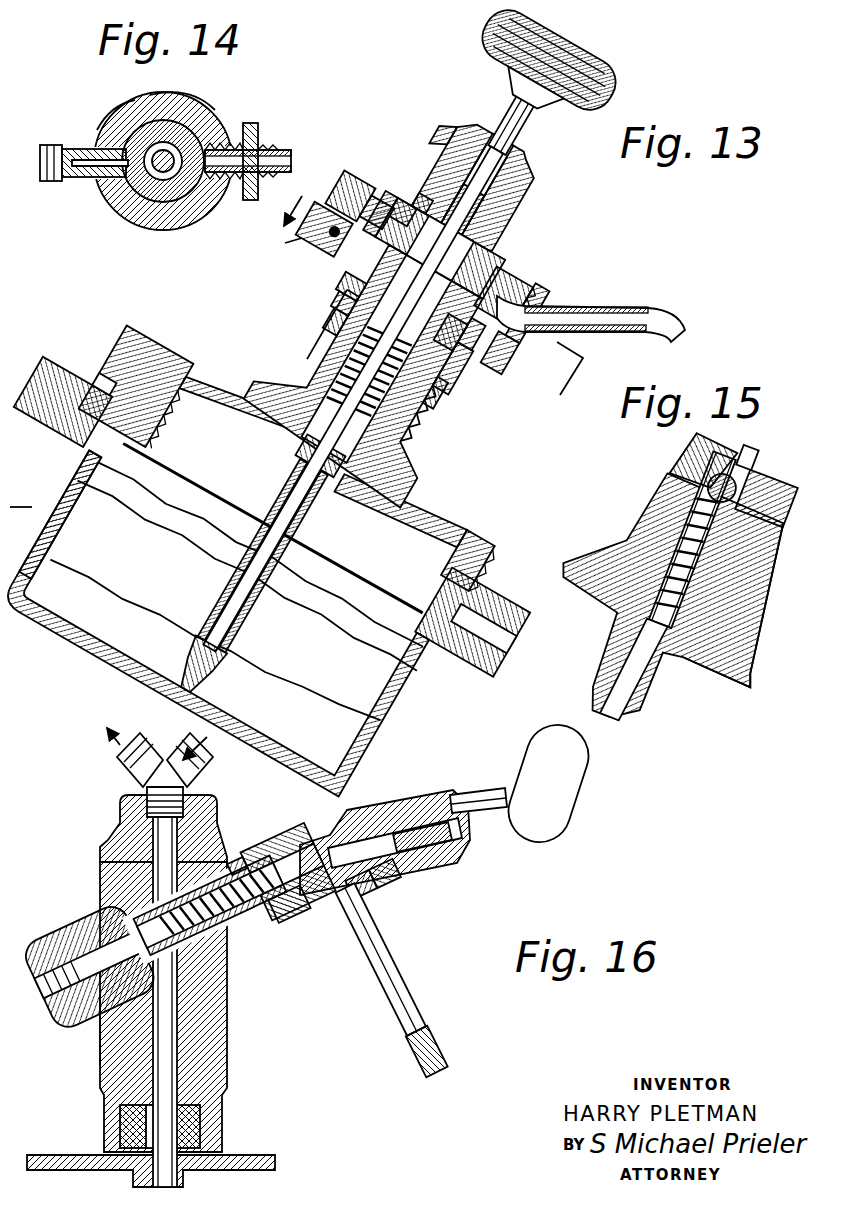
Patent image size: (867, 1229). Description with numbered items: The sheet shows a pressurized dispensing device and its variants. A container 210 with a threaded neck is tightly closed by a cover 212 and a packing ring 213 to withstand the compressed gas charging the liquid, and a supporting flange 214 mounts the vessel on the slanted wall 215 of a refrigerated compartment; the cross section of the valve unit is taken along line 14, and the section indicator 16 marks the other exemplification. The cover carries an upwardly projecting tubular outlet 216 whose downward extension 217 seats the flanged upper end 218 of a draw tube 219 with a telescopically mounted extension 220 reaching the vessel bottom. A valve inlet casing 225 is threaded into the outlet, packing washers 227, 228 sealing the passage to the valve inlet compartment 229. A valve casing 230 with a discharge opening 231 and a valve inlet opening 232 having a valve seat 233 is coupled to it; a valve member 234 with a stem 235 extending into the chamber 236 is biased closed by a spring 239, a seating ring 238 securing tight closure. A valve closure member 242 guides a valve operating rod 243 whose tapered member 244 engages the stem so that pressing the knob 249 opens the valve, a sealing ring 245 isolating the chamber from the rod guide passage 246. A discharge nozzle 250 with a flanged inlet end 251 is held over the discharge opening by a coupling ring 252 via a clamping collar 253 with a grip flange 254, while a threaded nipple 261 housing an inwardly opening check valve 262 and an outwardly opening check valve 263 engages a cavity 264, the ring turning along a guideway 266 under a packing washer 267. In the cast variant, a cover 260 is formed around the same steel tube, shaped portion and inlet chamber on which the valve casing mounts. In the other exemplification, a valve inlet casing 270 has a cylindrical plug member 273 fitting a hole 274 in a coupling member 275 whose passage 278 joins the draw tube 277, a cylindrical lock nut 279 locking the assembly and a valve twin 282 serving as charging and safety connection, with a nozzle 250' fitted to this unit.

In FIG. 13, the section line 14— 14 is at (421, 307).
In FIG. 13, the figure 16 reference 16 is at (22, 496).
In FIG. 13, the container 210 is at (90, 465).
In FIG. 13, the cover 212 is at (220, 397).
In FIG. 16, the cover 212 is at (247, 1157).
In FIG. 13, the packing ring 213 is at (170, 357).
In FIG. 13, the supporting flange 214 is at (112, 388).
In FIG. 13, the slanted wall 215 is at (68, 363).
In FIG. 13, the tubular outlet 216 is at (387, 450).
In FIG. 13, the downward extension 217 is at (295, 538).
In FIG. 13, the flanged upper end 218 is at (333, 467).
In FIG. 13, the draw tube 219 is at (268, 580).
In FIG. 13, the telescopically mounted extension 220 is at (242, 617).
In FIG. 13, the valve inlet casing 225 is at (435, 392).
In FIG. 13, the packing washer 227 is at (390, 476).
In FIG. 13, the packing washer 228 is at (415, 405).
In FIG. 13, the valve inlet compartment 229 is at (318, 340).
In FIG. 13, the valve casing 230 is at (440, 362).
In FIG. 16, the valve casing 230 is at (308, 835).
In FIG. 14, the discharge opening 231 is at (190, 168).
In FIG. 13, the discharge opening 231 is at (446, 330).
In FIG. 13, the valve inlet opening 232 is at (362, 276).
In FIG. 13, the valve seat 233 is at (350, 290).
In FIG. 13, the valve member 234 is at (357, 330).
In FIG. 15, the valve member 234 is at (728, 475).
In FIG. 16, the valve member 234 is at (290, 920).
In FIG. 14, the stem 235 is at (153, 155).
In FIG. 13, the stem 235 is at (393, 207).
In FIG. 16, the stem 235 is at (363, 887).
In FIG. 13, the chamber 236 is at (430, 200).
In FIG. 16, the chamber 236 is at (387, 880).
In FIG. 13, the seating ring 238 is at (355, 310).
In FIG. 16, the seating ring 238 is at (293, 848).
In FIG. 13, the spring 239 is at (313, 390).
In FIG. 15, the spring 239 is at (690, 580).
In FIG. 16, the spring 239 is at (108, 1027).
In FIG. 13, the valve closure member 242 is at (508, 198).
In FIG. 16, the valve closure member 242 is at (437, 867).
In FIG. 13, the valve operating rod 243 is at (512, 150).
In FIG. 16, the valve operating rod 243 is at (493, 820).
In FIG. 13, the tapered member 244 is at (535, 220).
In FIG. 13, the sealing ring 245 is at (506, 216).
In FIG. 16, the sealing ring 245 is at (383, 823).
In FIG. 13, the rod guide passage 246 is at (462, 150).
In FIG. 13, the knob 249 is at (578, 60).
In FIG. 16, the knob 249 is at (567, 795).
In FIG. 14, the discharge nozzle 250 is at (263, 128).
In FIG. 13, the discharge nozzle 250 is at (591, 334).
In FIG. 16, the tube 250' is at (398, 980).
In FIG. 14, the flanged inlet end 251 is at (213, 142).
In FIG. 13, the flanged inlet end 251 is at (497, 271).
In FIG. 14, the coupling ring 252 is at (192, 99).
In FIG. 13, the coupling ring 252 is at (497, 268).
In FIG. 14, the clamping collar 253 is at (244, 128).
In FIG. 13, the clamping collar 253 is at (515, 283).
In FIG. 14, the grip flange 254 is at (268, 117).
In FIG. 13, the grip flange 254 is at (485, 332).
In FIG. 15, the cover 260 is at (597, 557).
In FIG. 14, the threaded nipple 261 is at (105, 138).
In FIG. 13, the threaded nipple 261 is at (338, 140).
In FIG. 15, the threaded nipple 261 is at (637, 680).
In FIG. 13, the inwardly opening check valve 262 is at (325, 208).
In FIG. 15, the inwardly opening check valve 262 is at (673, 535).
In FIG. 13, the outwardly opening check valve 263 is at (322, 246).
In FIG. 15, the outwardly opening check valve 263 is at (697, 507).
In FIG. 14, the cavity 264 is at (118, 110).
In FIG. 15, the cavity 264 is at (688, 445).
In FIG. 13, the guideway 266 is at (470, 333).
In FIG. 13, the packing washer 267 is at (398, 207).
In FIG. 16, the valve inlet casing 270 is at (247, 947).
In FIG. 16, the cylindrical plug member 273 is at (227, 977).
In FIG. 16, the hole 274 is at (140, 903).
In FIG. 16, the coupling member 275 is at (203, 828).
In FIG. 16, the draw tube 277 is at (193, 1130).
In FIG. 16, the passage 278 is at (163, 1033).
In FIG. 16, the cylindrical lock nut 279 is at (77, 923).
In FIG. 16, the valve twin 282 is at (138, 770).